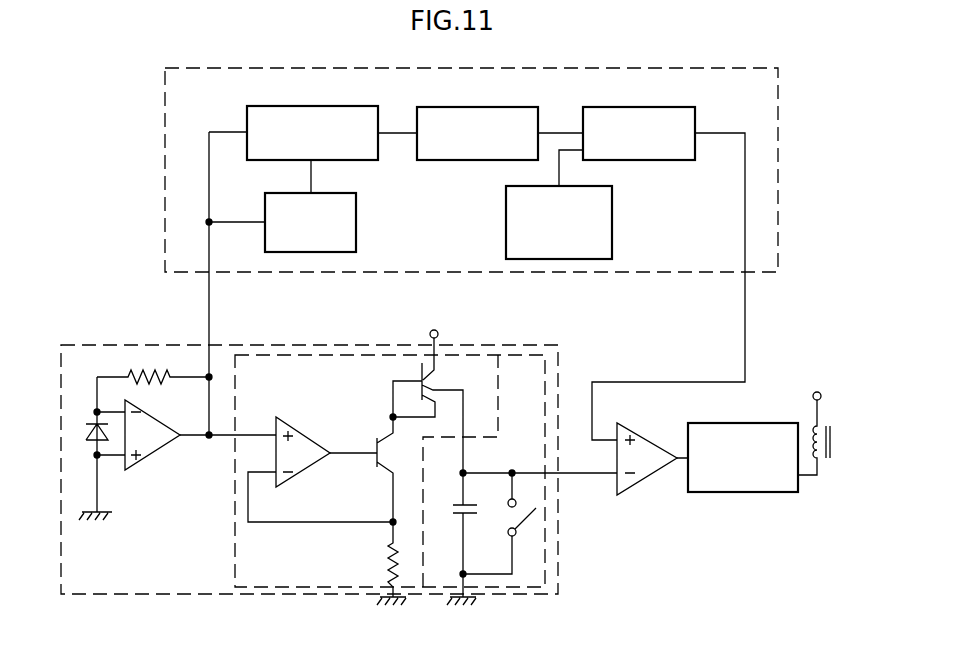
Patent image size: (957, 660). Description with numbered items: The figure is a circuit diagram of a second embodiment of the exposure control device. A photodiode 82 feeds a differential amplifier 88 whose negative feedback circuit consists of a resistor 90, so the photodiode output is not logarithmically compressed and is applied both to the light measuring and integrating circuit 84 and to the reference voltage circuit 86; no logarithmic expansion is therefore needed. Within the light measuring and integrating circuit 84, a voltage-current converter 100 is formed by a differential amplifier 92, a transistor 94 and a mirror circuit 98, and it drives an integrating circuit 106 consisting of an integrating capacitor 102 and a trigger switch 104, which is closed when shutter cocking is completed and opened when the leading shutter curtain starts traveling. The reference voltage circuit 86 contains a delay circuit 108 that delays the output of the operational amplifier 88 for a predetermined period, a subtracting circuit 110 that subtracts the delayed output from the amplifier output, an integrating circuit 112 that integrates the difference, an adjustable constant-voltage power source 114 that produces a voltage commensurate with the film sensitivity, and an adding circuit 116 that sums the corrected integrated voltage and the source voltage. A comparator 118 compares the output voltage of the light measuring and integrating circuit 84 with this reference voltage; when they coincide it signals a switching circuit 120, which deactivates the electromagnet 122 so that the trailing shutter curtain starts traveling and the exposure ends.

The photodiode 82 is at (86, 438).
The light measuring and integrating circuit 84 is at (61, 569).
The reference voltage circuit 86 is at (163, 175).
The differential amplifier 88 is at (163, 441).
The resistor 90 is at (156, 372).
The differential amplifier 92 is at (308, 460).
The transistor 94 is at (375, 444).
The mirror circuit 98 is at (422, 364).
The voltage-current converter 100 is at (300, 355).
The integrating capacitor 102 is at (457, 511).
The trigger switch 104 is at (537, 520).
The integrating circuit 106 is at (515, 595).
The delay circuit 108 is at (356, 222).
The subtracting circuit 110 is at (378, 106).
The integrating circuit 112 is at (538, 107).
The adjustable constant-voltage power source 114 is at (594, 222).
The adding circuit 116 is at (695, 107).
The comparator 118 is at (645, 452).
The switching circuit 120 is at (760, 481).
The electromagnet 122 is at (829, 430).